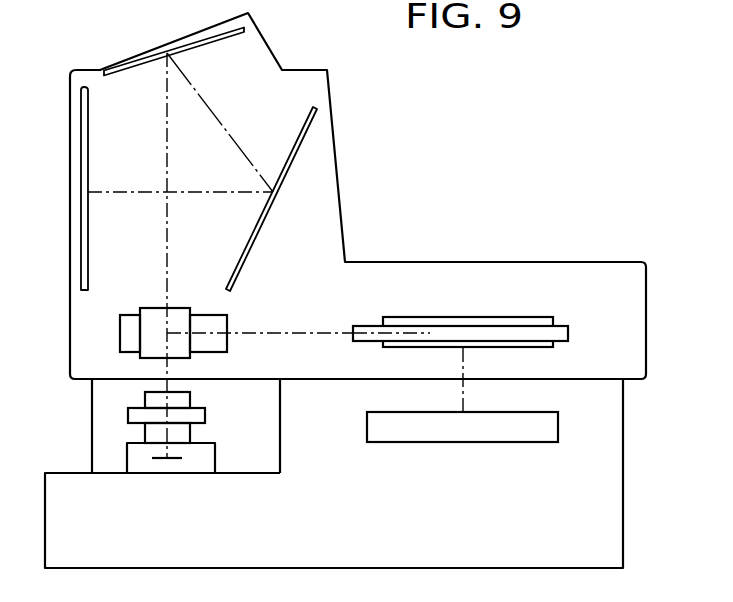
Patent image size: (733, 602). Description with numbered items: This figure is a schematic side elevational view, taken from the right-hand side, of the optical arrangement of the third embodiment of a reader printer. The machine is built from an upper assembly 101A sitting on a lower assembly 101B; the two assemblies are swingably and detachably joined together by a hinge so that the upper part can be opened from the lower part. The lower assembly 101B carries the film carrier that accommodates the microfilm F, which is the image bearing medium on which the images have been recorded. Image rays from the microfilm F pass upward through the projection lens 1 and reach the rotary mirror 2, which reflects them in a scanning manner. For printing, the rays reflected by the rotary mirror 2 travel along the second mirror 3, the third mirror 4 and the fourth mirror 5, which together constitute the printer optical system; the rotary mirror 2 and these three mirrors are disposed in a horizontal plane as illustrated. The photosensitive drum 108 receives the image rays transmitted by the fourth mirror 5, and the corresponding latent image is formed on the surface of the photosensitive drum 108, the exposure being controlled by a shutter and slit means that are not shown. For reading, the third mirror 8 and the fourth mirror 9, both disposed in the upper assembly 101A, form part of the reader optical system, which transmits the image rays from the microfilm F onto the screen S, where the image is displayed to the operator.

The projection lens 1 is at (127, 415).
The rotary mirror 2 is at (147, 338).
The second mirror 3 is at (122, 330).
The third mirror 4 is at (480, 318).
The fourth mirror 5 is at (569, 333).
The third mirror 8 is at (187, 40).
The fourth mirror 9 is at (300, 123).
The photosensitive drum 108 is at (545, 443).
The upper assembly 101A is at (341, 192).
The lower assembly 101B is at (505, 571).
The screen S is at (82, 148).
The microfilm F is at (157, 460).